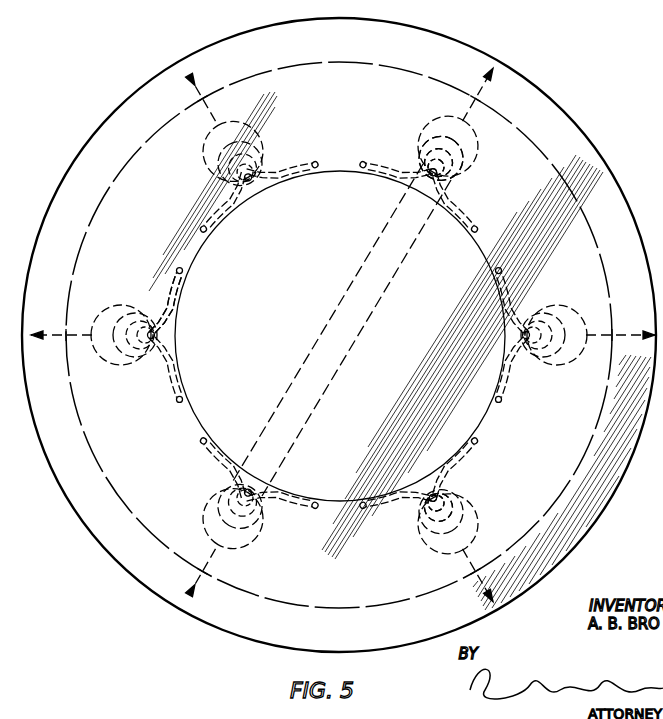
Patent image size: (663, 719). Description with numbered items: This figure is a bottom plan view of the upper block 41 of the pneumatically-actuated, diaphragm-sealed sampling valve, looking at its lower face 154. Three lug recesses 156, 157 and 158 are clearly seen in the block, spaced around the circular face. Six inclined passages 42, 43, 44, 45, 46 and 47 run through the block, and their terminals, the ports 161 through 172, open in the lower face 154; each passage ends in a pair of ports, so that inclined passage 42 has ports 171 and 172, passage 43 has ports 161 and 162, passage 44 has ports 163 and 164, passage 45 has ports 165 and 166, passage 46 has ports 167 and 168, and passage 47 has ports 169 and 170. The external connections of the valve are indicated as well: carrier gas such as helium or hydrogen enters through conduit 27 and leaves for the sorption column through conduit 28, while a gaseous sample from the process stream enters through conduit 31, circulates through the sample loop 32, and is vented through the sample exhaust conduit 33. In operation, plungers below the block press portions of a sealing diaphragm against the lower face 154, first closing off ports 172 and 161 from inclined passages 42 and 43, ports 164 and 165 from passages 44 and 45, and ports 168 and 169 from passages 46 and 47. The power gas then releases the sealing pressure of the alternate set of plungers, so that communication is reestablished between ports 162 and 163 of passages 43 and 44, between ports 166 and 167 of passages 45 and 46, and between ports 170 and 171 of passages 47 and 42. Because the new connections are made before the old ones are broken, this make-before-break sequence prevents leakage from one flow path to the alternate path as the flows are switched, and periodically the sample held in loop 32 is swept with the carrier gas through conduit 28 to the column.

The conduit 27 is at (650, 340).
The conduit 28 is at (468, 597).
The conduit 31 is at (200, 64).
The sample loop 32 is at (345, 290).
The sample exhaust conduit 33 is at (48, 334).
The upper block 41 is at (137, 101).
The inclined passage 42 is at (561, 311).
The inclined passage 43 is at (455, 115).
The inclined passage 44 is at (220, 112).
The inclined passage 45 is at (116, 306).
The inclined passage 46 is at (190, 505).
The inclined passage 47 is at (477, 512).
The lower face 154 is at (537, 110).
The lug recess 156 is at (428, 163).
The lug recess 157 is at (441, 493).
The lug recess 158 is at (172, 299).
The port 161 is at (474, 226).
The port 162 is at (374, 168).
The port 163 is at (318, 170).
The port 164 is at (210, 224).
The port 165 is at (184, 272).
The port 166 is at (179, 400).
The port 167 is at (213, 440).
The port 168 is at (308, 512).
The port 169 is at (367, 508).
The port 170 is at (477, 447).
The port 171 is at (504, 398).
The port 172 is at (503, 275).